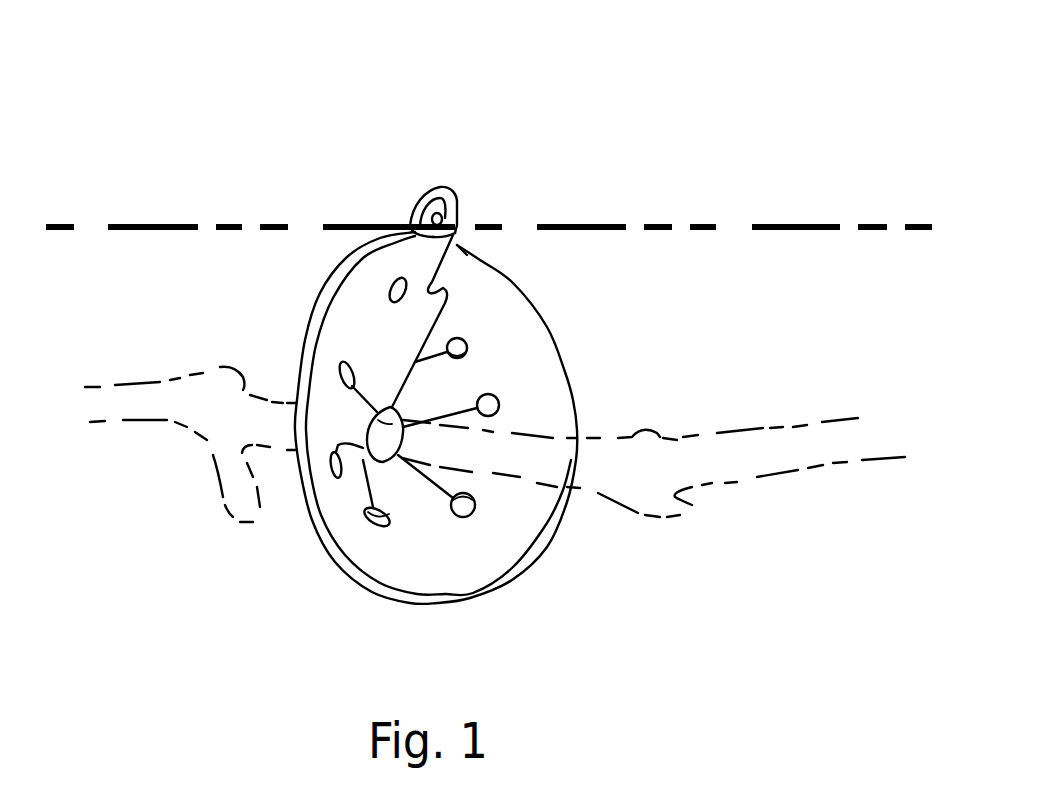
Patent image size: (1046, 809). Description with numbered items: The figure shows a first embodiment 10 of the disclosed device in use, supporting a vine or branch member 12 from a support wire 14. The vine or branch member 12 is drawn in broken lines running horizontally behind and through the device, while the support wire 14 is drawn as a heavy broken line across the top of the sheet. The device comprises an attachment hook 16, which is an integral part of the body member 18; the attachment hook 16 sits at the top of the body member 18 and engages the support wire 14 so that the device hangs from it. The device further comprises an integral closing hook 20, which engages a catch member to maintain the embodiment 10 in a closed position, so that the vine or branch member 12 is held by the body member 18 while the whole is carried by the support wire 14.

The first embodiment 10 is at (432, 124).
The vine or branch member 12 is at (772, 483).
The support wire 14 is at (787, 221).
The attachment hook 16 is at (450, 187).
The body member 18 is at (622, 360).
The closing hook 20 is at (467, 277).